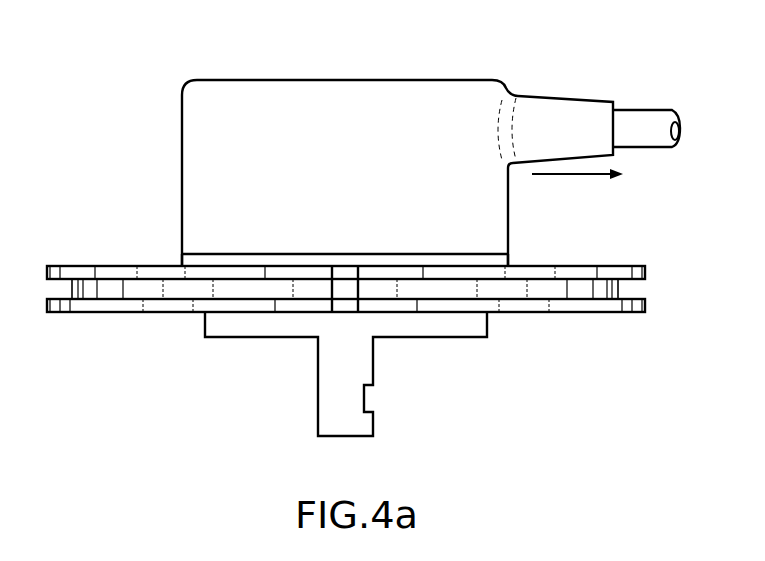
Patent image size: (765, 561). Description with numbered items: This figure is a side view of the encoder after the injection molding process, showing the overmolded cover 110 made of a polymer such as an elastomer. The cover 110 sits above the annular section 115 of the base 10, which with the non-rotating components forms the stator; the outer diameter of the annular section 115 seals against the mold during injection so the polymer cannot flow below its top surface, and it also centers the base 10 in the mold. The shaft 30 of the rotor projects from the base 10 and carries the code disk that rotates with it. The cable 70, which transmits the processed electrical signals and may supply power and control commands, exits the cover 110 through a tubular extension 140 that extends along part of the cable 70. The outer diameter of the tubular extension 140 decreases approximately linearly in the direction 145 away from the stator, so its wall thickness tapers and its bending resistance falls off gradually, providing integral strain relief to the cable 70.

The base 10 is at (147, 272).
The shaft 30 is at (332, 399).
The cable 70 is at (643, 124).
The overmolded cover 110 is at (253, 115).
The annular section 115 is at (502, 261).
The tubular extension 140 is at (613, 57).
The direction 145 is at (556, 176).